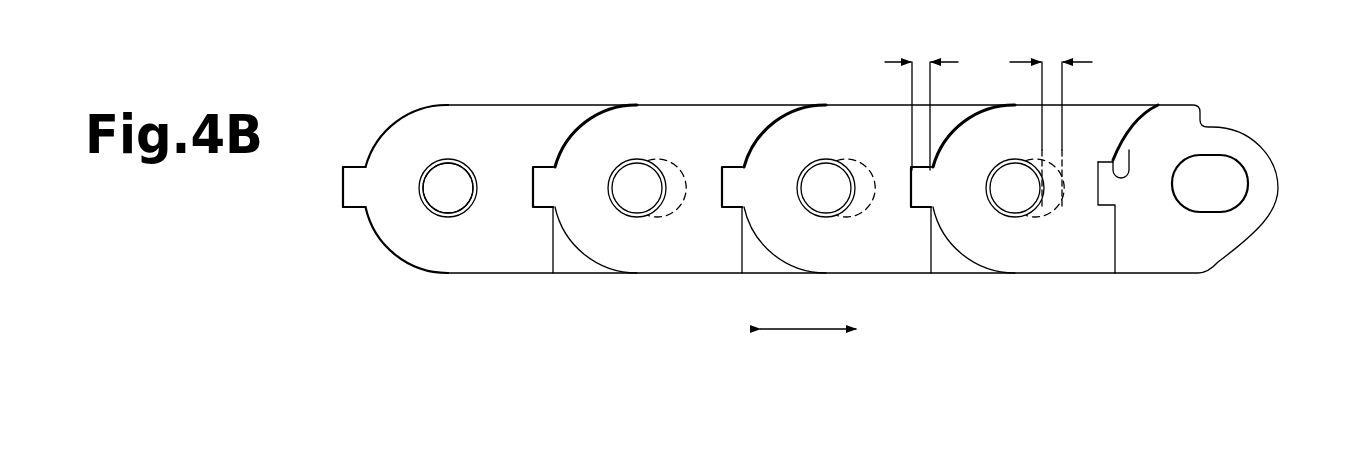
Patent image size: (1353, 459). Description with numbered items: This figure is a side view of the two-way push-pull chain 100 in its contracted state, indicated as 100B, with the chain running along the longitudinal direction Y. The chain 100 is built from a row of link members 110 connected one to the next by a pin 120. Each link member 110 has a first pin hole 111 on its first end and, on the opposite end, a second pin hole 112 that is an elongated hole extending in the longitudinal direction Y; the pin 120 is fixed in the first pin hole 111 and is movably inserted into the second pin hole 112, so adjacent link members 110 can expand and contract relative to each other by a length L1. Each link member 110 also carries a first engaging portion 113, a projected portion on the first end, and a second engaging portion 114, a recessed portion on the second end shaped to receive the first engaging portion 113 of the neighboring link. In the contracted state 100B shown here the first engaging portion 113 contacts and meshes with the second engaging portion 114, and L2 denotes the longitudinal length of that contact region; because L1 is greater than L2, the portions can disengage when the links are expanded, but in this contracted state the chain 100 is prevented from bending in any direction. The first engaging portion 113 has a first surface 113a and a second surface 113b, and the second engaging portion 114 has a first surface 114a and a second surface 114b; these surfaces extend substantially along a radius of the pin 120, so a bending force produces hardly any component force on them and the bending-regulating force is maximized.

The two-way push-pull chain 100 is at (524, 84).
The two-way push-pull chain in contracted state 100B is at (771, 185).
The link member 110 is at (744, 124).
The first pin hole 111 is at (424, 195).
The second pin hole 112 is at (675, 202).
The first engaging portion 113 is at (341, 198).
The first surface 113a is at (362, 166).
The second surface 113b is at (362, 208).
The second engaging portion 114 is at (1107, 190).
The first surface 114a is at (1120, 160).
The second surface 114b is at (1096, 193).
The pin 120 is at (462, 195).
The length L1 is at (1051, 120).
The length L2 is at (921, 101).
The longitudinal direction Y is at (808, 317).